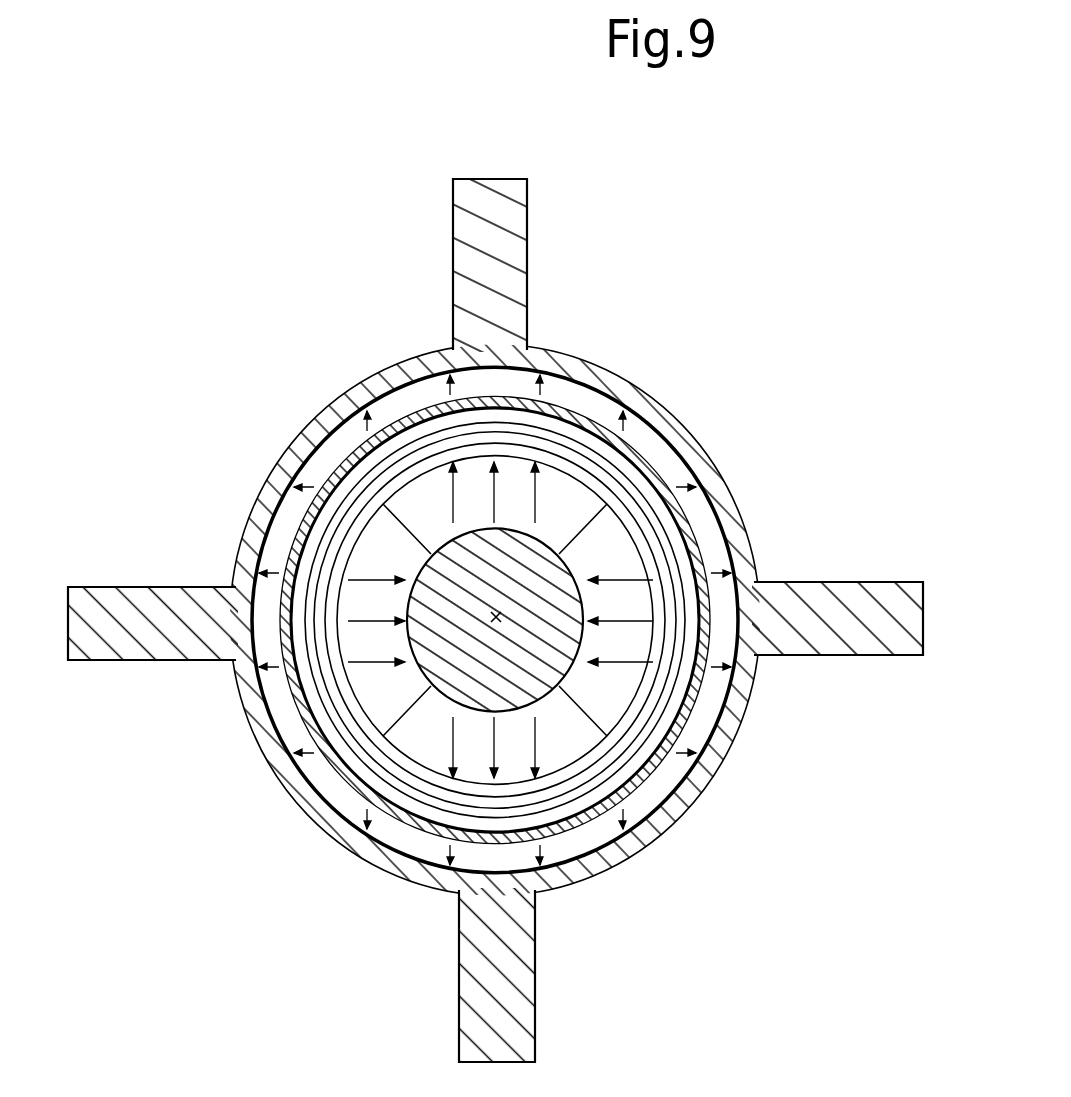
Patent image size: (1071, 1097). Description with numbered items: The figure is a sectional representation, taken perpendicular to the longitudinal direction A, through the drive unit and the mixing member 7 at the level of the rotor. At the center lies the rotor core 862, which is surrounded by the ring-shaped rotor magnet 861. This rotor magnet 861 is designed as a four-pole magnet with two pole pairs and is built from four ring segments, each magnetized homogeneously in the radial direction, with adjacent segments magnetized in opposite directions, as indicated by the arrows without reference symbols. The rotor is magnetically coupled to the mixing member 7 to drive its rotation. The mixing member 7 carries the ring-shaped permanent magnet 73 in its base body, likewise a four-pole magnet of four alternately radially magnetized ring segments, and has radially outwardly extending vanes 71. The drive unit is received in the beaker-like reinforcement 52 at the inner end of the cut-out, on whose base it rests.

The mixing member 7 is at (495, 620).
The vanes 71 is at (558, 995).
The ring-shaped permanent magnet 73 is at (588, 395).
The beaker-like reinforcement 52 is at (432, 437).
The rotor magnet 861 is at (610, 545).
The rotor core 862 is at (435, 640).
The longitudinal direction A is at (498, 618).